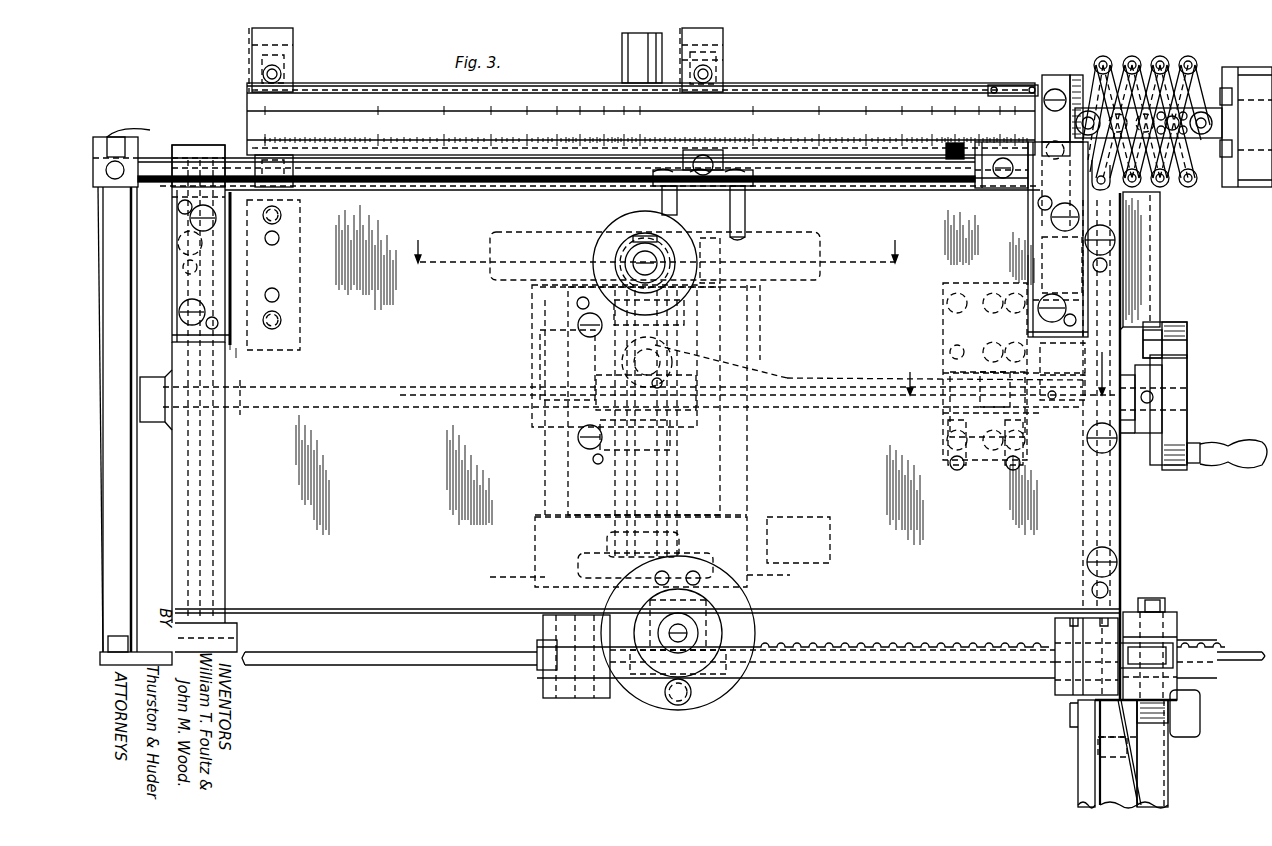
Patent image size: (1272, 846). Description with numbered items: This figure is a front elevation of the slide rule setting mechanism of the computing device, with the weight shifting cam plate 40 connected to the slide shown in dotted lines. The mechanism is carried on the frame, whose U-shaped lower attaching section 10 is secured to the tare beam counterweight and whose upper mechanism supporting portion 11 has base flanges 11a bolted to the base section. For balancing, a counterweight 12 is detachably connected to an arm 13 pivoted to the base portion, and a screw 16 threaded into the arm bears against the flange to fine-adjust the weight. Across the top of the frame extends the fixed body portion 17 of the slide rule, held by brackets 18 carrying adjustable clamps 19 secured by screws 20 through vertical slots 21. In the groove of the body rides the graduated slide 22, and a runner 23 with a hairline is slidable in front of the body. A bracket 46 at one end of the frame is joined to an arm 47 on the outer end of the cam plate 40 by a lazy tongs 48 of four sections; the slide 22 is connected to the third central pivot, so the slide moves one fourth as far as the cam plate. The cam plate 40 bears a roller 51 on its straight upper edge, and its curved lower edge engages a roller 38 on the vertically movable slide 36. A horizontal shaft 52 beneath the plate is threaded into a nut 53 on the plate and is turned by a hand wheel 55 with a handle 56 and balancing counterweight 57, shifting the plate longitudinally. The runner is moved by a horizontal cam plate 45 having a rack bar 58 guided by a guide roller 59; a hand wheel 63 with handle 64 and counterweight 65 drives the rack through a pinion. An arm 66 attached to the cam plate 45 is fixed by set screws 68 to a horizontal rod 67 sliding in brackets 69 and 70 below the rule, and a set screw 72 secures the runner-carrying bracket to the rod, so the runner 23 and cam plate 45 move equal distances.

The lower attaching section 10 is at (1078, 771).
The upper mechanism supporting portion 11 is at (176, 496).
The base flanges 11a is at (191, 637).
The counterweight 12 is at (639, 383).
The arm 13 is at (1183, 770).
The screw 16 is at (703, 35).
The fixed body portion 17 is at (250, 100).
The brackets 18 is at (285, 222).
The adjustable clamps 19 is at (290, 62).
The screws 20 is at (262, 77).
The vertical slots 21 is at (262, 64).
The slide 22 is at (250, 124).
The runner 23 is at (1020, 92).
The vertically movable slide 36 is at (625, 68).
The roller 38 is at (665, 345).
The cam plate 40 is at (795, 380).
The cam plate 45 is at (368, 668).
The bracket 46 is at (1160, 237).
The arm 47 is at (1040, 255).
The lazy tongs 48 is at (1183, 58).
The roller 51 is at (628, 238).
The horizontal shaft 52 is at (387, 408).
The nut 53 is at (953, 418).
The hand wheel 55 is at (1188, 363).
The handle 56 is at (1232, 446).
The counterweight 57 is at (1158, 325).
The rack bar 58 is at (1007, 672).
The guide roller 59 is at (1178, 635).
The hand wheel 63 is at (720, 690).
The handle 64 is at (677, 704).
The counterweight 65 is at (720, 567).
The arm 66 is at (132, 556).
The horizontal rod 67 is at (395, 185).
The set screws 68 is at (122, 170).
The bracket 69 is at (198, 160).
The bracket 70 is at (1040, 198).
The set screw 72 is at (1002, 190).